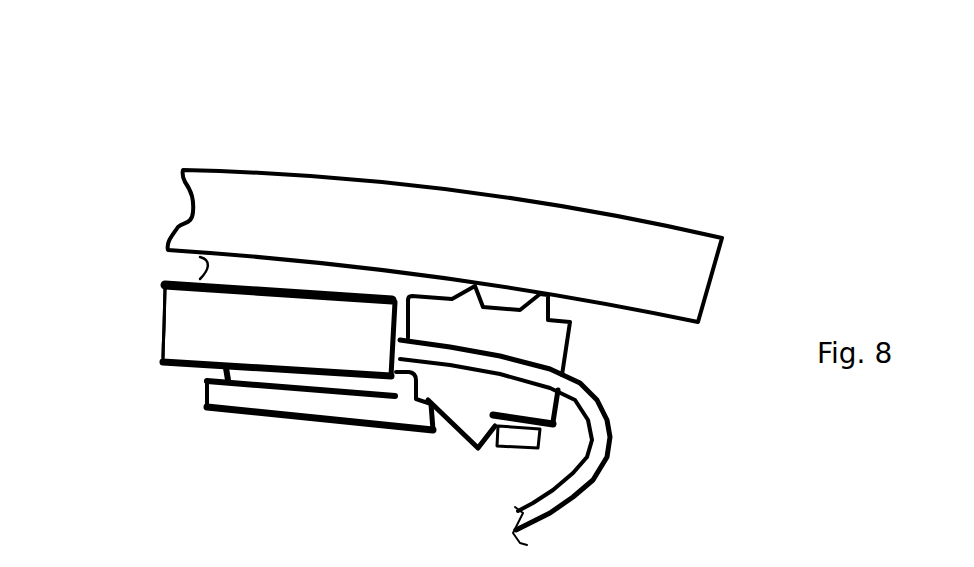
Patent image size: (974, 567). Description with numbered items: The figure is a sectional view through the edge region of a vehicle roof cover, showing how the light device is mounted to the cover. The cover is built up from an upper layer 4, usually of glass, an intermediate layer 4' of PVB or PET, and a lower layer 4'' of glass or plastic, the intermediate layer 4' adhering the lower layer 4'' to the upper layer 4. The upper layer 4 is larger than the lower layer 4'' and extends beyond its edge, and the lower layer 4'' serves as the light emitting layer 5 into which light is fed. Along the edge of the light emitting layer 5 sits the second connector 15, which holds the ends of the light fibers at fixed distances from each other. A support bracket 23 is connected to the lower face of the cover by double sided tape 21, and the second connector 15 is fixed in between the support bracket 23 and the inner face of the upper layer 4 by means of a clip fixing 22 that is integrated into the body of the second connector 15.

The upper layer 4 is at (445, 181).
The intermediate layer 4' is at (270, 161).
The lower layer 4'' is at (284, 206).
The light emitting layer 5 is at (187, 333).
The second connector 15 is at (452, 325).
The double sided tape 21 is at (257, 372).
The clip fixing 22 is at (467, 420).
The support bracket 23 is at (329, 396).